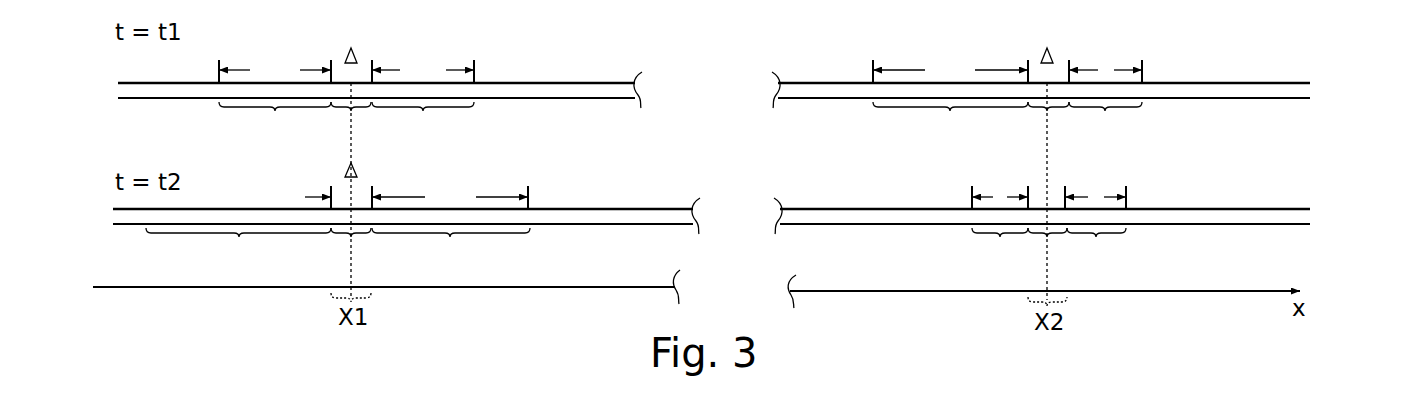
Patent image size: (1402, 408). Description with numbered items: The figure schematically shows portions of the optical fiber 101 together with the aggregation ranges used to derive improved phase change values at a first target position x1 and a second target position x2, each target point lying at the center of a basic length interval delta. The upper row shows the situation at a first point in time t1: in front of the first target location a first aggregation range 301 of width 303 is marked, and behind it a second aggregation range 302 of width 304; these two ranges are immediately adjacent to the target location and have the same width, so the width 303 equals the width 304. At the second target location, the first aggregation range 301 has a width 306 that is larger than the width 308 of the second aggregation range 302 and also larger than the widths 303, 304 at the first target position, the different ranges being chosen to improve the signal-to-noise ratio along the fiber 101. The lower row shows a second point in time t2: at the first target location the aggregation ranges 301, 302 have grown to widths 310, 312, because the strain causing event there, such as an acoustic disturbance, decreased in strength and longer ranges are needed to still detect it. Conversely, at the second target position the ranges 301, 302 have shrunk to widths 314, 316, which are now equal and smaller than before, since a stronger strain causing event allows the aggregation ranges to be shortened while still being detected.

The fiber 101 is at (1262, 83).
The first aggregation range 301 is at (587, 185).
The second aggregation range 302 is at (757, 185).
The width 303 is at (275, 71).
The width 304 is at (423, 71).
The width 306 is at (950, 71).
The width 308 is at (1105, 64).
The width 310 is at (294, 197).
The width 312 is at (450, 197).
The width 314 is at (1000, 189).
The width 316 is at (1095, 189).